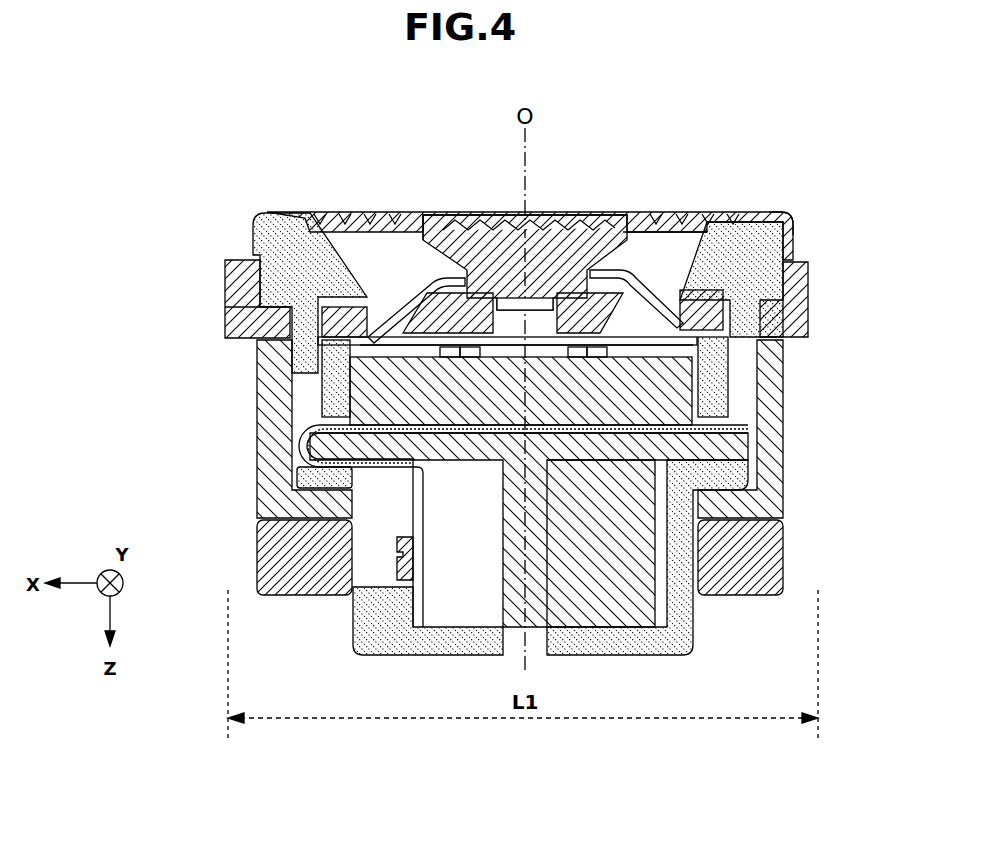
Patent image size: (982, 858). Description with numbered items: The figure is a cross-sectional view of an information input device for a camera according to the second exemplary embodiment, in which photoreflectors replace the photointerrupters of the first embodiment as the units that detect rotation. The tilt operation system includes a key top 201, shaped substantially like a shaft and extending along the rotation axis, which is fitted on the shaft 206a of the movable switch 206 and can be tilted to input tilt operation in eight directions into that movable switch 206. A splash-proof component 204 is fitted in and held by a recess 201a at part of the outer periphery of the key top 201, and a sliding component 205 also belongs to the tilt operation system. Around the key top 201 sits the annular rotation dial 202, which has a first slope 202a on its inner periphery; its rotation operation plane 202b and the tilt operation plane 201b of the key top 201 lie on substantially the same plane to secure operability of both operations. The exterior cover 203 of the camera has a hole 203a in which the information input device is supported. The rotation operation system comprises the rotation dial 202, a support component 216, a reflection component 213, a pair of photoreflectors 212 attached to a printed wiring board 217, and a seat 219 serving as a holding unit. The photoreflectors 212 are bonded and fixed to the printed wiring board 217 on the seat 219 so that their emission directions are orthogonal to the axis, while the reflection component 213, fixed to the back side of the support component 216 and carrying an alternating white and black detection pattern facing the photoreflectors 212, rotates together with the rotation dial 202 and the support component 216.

The key top 201 is at (540, 214).
The recess 201a is at (422, 217).
The tilt operation plane 201b is at (490, 214).
The rotation dial 202 is at (794, 244).
The first slope 202a is at (713, 233).
The rotation operation plane 202b is at (765, 210).
The exterior cover 203 is at (237, 258).
The hole 203a is at (257, 322).
The splash-proof component 204 is at (318, 300).
The sliding component 205 is at (272, 214).
The movable switch 206 is at (560, 395).
The shaft 206a is at (683, 290).
The photoreflectors 212 is at (380, 568).
The reflection component 213 is at (777, 545).
The support component 216 is at (773, 404).
The printed wiring board 217 is at (305, 447).
The seat 219 is at (625, 627).